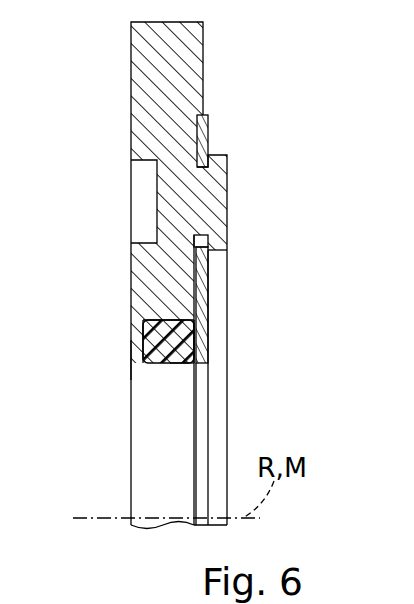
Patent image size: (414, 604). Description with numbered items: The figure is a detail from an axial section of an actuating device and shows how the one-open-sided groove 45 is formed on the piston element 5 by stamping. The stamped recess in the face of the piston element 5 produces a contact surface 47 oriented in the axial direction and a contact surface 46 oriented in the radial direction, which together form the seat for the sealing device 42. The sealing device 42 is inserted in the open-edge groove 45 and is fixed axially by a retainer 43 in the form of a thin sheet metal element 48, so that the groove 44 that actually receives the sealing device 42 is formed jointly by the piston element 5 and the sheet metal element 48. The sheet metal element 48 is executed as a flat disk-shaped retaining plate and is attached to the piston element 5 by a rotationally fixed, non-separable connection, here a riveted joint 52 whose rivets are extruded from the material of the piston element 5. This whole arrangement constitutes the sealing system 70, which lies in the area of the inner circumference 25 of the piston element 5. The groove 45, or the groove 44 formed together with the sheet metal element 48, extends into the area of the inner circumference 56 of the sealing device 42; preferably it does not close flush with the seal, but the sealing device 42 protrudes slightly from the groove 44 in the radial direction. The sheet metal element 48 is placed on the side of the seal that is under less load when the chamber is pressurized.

The piston element 5 is at (160, 62).
The sealing system 70 is at (236, 173).
The riveted joint 52 is at (215, 214).
The retainer 43 is at (263, 380).
The sheet metal element 48 is at (202, 278).
The inner circumference of sealing device 56 is at (167, 366).
The radial contact surface 46 is at (134, 305).
The open-edge groove 45 is at (137, 314).
The axial contact surface 47 is at (136, 334).
The inner circumference of piston element 25 is at (133, 358).
The groove 44 is at (190, 326).
The sealing device 42 is at (193, 354).